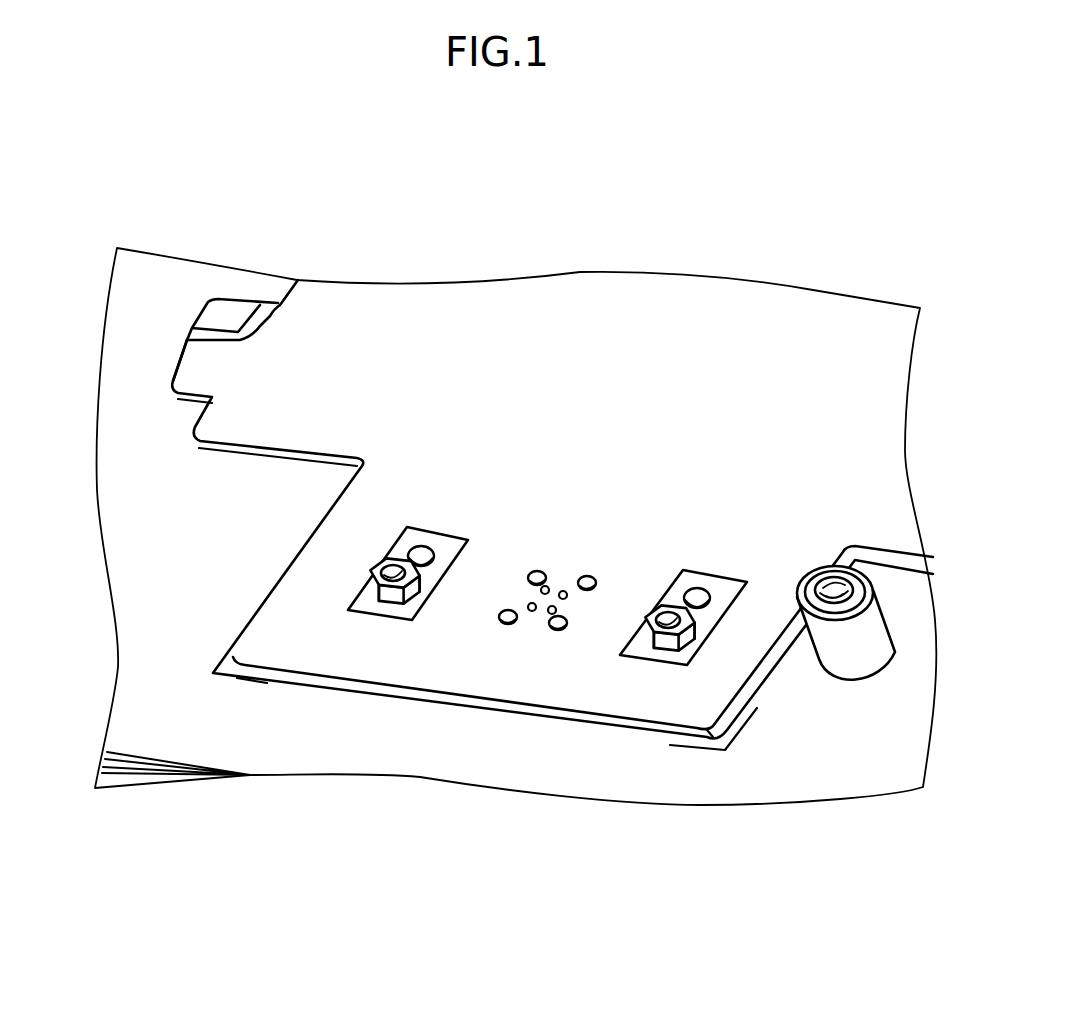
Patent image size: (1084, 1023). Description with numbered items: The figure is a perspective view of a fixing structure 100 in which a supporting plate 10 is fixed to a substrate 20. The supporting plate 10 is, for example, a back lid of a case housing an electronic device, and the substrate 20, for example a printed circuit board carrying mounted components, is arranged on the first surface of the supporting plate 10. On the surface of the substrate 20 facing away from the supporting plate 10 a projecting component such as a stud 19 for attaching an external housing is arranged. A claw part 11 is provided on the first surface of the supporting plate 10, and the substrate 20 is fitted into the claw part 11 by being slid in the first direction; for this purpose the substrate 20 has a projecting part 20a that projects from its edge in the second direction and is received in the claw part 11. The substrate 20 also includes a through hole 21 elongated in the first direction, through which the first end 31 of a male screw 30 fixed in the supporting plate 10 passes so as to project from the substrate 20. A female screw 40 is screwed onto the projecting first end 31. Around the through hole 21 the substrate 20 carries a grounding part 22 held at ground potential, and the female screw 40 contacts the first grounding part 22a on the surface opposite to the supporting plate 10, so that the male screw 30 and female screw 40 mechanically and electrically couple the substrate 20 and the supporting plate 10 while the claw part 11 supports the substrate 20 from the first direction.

The fixing structure 100 is at (822, 176).
The supporting plate 10 is at (173, 565).
The claw part 11 is at (230, 312).
The substrate 20 is at (887, 448).
The projecting part 20a is at (205, 366).
The first grounding part 22a is at (365, 603).
The grounding part 22 is at (638, 648).
The through hole 21 is at (430, 565).
The male screw 30 is at (519, 714).
The first end 31 is at (380, 587).
The female screw 40 is at (402, 592).
The stud 19 is at (863, 653).